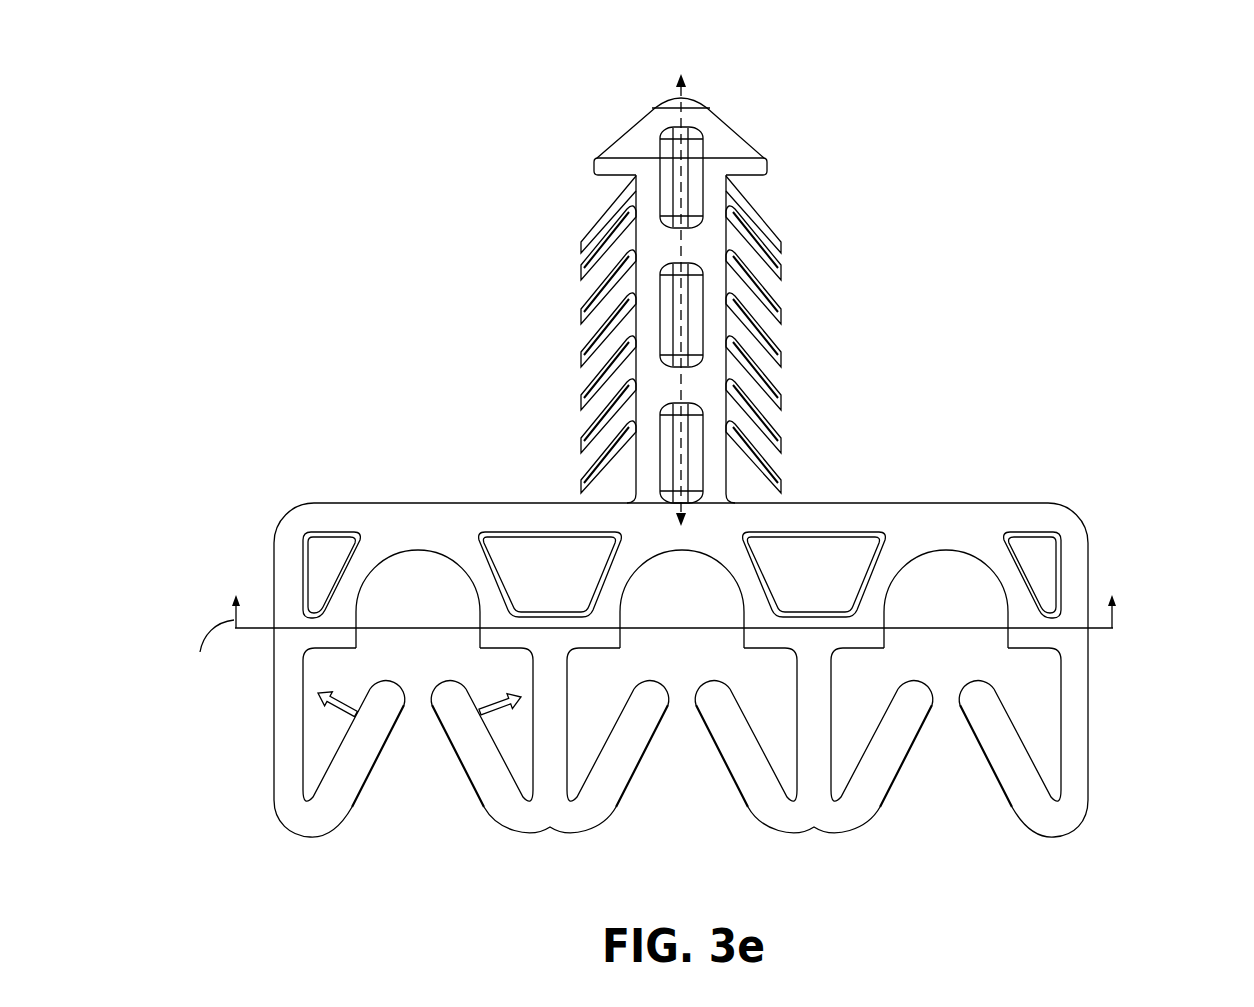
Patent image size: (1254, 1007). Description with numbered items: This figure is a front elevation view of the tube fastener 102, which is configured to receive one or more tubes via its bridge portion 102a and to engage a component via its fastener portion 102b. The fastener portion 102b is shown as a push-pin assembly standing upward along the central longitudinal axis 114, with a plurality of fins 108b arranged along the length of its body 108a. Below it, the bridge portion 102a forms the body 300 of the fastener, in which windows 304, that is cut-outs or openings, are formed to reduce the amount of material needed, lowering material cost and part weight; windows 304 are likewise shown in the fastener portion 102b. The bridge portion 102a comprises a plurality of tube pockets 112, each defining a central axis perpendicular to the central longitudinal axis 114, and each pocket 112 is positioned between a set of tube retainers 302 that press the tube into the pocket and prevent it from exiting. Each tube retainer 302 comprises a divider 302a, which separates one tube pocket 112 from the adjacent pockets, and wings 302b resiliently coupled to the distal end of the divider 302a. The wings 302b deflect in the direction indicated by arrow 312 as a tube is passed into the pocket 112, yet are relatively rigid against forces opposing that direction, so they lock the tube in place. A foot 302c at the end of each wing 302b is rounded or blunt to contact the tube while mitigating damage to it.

The tube fastener 102 is at (1042, 137).
The bridge portion 102a is at (1137, 517).
The fastener portion 102b is at (504, 226).
The body 108a is at (764, 164).
The fins 108b is at (793, 250).
The tube pocket 112 is at (420, 552).
The central longitudinal axis 114 is at (677, 83).
The body 300 is at (404, 498).
The tube retainer 302 is at (270, 840).
The divider 302a is at (308, 675).
The wing 302b is at (380, 757).
The foot 302c is at (437, 683).
The window 304 is at (664, 176).
The arrow 312 is at (338, 711).